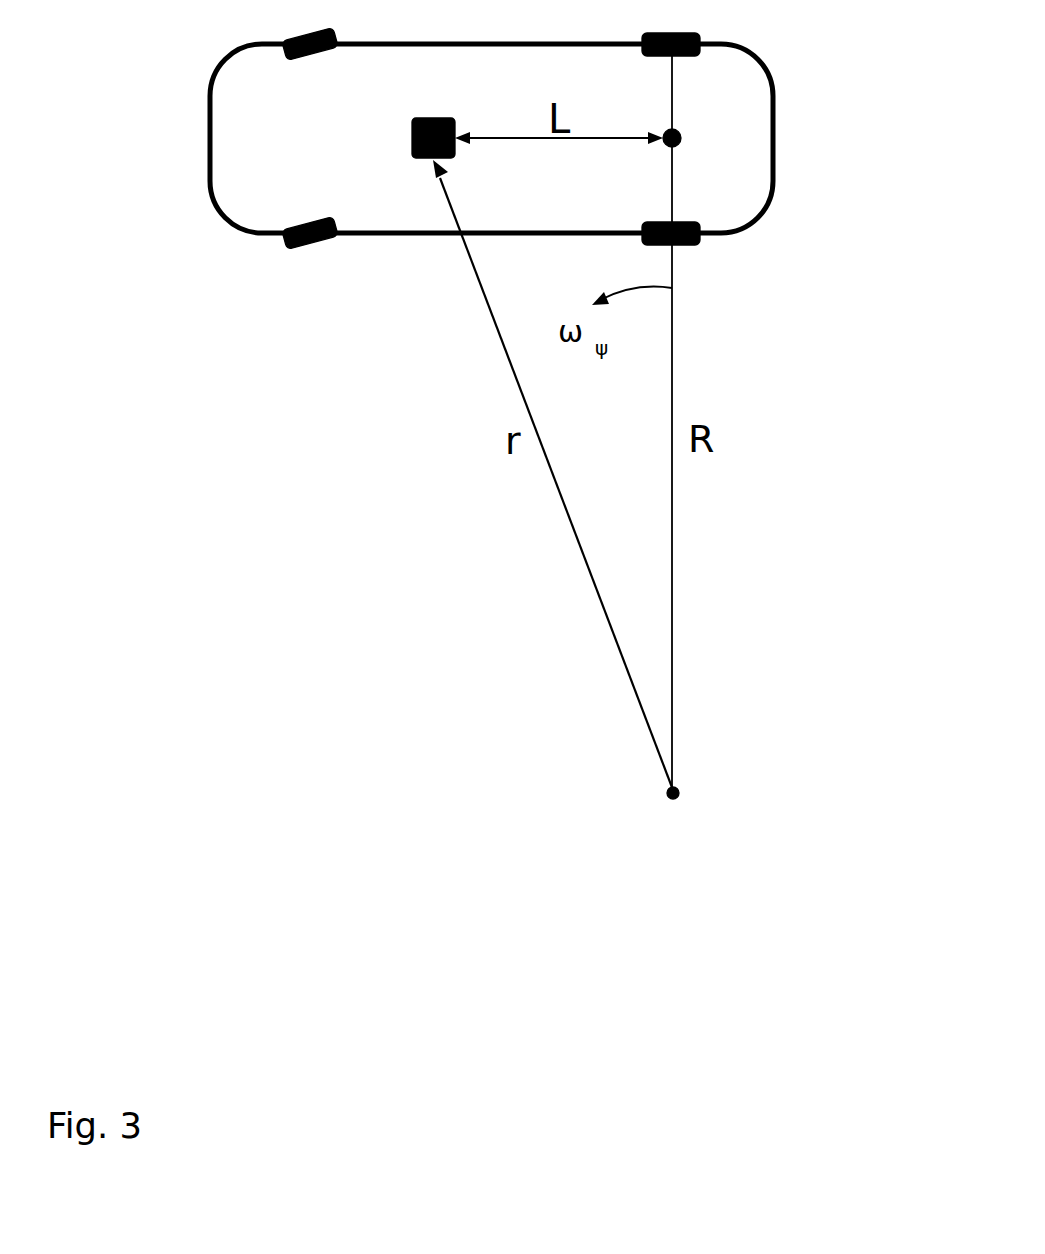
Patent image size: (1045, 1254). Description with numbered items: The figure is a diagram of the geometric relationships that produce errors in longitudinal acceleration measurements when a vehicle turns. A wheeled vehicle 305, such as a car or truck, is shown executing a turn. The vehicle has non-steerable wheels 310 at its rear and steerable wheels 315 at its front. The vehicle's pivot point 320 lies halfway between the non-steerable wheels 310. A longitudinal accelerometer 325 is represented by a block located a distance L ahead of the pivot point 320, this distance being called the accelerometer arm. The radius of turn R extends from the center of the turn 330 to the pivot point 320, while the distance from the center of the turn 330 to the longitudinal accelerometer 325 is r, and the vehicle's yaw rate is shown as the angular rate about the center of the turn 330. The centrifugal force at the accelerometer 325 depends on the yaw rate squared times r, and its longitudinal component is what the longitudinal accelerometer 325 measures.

The wheeled vehicle 305 is at (777, 193).
The non-steerable wheels 310 is at (700, 245).
The steerable wheels 315 is at (285, 252).
The pivot point 320 is at (684, 132).
The longitudinal accelerometer 325 is at (408, 137).
The center of the turn 330 is at (679, 790).